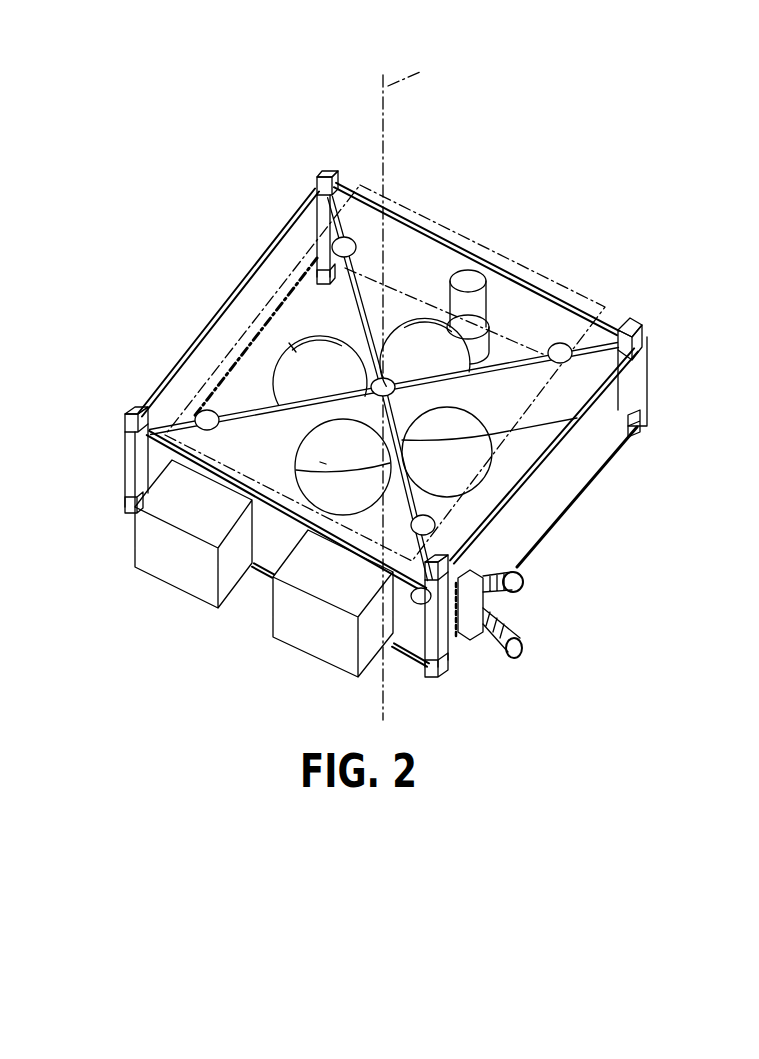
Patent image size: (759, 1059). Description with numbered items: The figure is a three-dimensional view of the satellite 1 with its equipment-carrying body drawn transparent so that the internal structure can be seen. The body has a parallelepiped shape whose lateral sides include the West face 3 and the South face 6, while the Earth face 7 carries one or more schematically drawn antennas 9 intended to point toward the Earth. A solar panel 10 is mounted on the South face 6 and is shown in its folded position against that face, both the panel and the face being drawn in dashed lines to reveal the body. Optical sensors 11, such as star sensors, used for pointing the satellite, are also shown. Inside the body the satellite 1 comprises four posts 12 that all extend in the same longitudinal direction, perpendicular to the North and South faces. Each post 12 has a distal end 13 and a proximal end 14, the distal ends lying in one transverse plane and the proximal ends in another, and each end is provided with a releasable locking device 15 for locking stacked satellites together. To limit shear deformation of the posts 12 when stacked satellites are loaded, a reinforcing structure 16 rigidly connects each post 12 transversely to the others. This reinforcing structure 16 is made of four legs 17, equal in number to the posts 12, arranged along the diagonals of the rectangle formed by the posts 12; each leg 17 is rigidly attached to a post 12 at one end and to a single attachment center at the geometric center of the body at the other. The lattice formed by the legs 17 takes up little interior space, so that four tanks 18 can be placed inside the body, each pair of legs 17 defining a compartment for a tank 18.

The satellite 1 is at (166, 229).
The West face 3 is at (582, 455).
The South face 6 is at (178, 392).
The Earth face 7 is at (272, 546).
The antennas 9 is at (172, 570).
The solar panel 10 is at (517, 300).
The optical sensors 11 is at (478, 610).
The posts 12 is at (340, 200).
The distal end 13 is at (317, 190).
The proximal end 14 is at (130, 505).
The releasable locking device 15 is at (324, 176).
The reinforcing structure 16 is at (335, 278).
The legs 17 is at (338, 296).
The tanks 18 is at (420, 318).